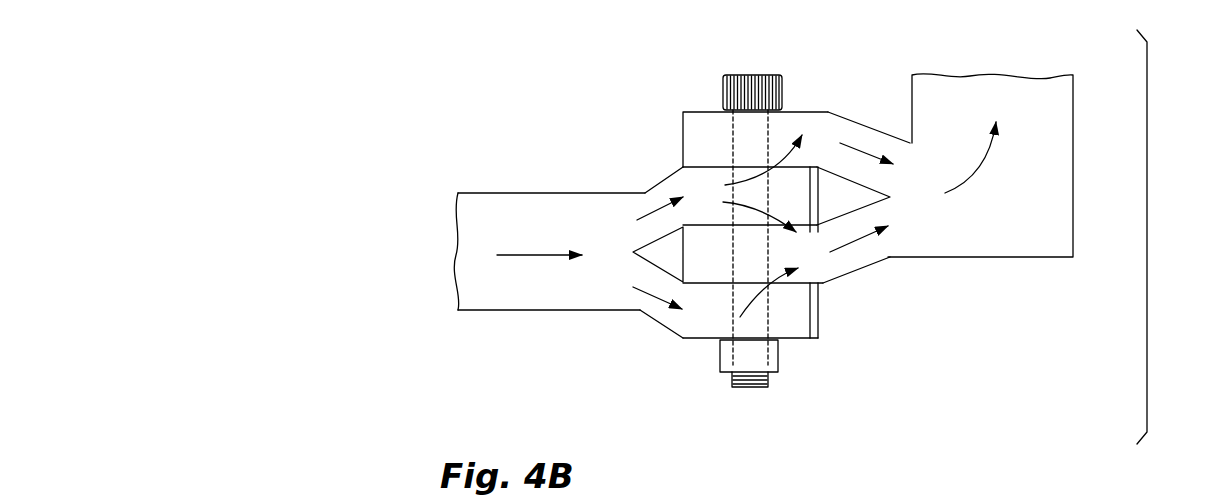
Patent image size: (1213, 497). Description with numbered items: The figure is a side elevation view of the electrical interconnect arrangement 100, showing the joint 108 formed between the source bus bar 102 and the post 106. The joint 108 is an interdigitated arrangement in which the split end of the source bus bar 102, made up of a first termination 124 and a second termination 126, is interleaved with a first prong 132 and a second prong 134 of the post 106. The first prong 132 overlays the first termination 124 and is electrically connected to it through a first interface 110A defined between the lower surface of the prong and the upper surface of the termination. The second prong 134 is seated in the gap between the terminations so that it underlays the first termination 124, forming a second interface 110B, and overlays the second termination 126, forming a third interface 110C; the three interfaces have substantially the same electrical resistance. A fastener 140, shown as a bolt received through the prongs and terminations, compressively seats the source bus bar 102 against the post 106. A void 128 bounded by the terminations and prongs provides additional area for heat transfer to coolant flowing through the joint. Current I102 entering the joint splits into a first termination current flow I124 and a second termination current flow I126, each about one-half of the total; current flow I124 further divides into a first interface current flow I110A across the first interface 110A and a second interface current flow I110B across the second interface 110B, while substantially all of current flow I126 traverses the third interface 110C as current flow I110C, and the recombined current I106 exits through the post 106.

The electrical interconnect arrangement 100 is at (1200, 221).
The source bus bar 102 is at (480, 208).
The post 106 is at (1062, 105).
The joint 108 is at (606, 86).
The first interface 110A is at (705, 165).
The second interface 110B is at (813, 166).
The third interface 110C is at (810, 338).
The first termination 124 is at (682, 186).
The second termination 126 is at (683, 340).
The void 128 is at (633, 250).
The first prong 132 is at (786, 124).
The second prong 134 is at (850, 257).
The fastener 140 is at (762, 75).
The current I102 is at (520, 256).
The current I106 is at (983, 172).
The first interface current flow I110A is at (748, 167).
The second interface current flow I110B is at (750, 178).
The third interface current flow I110C is at (752, 292).
The first termination current flow I124 is at (645, 193).
The second termination current flow I126 is at (641, 312).